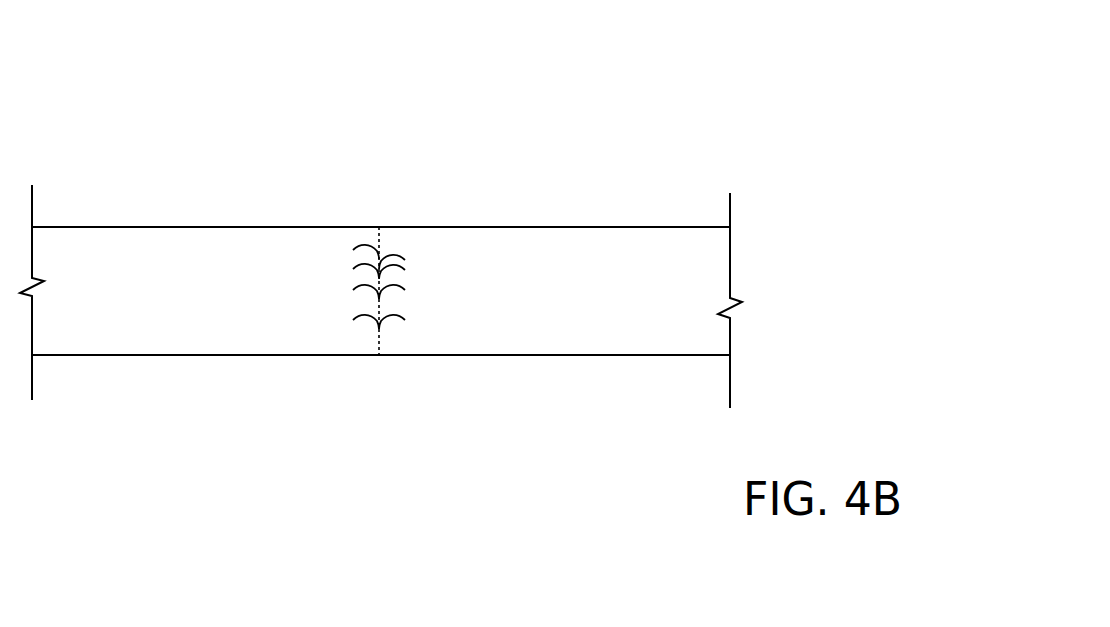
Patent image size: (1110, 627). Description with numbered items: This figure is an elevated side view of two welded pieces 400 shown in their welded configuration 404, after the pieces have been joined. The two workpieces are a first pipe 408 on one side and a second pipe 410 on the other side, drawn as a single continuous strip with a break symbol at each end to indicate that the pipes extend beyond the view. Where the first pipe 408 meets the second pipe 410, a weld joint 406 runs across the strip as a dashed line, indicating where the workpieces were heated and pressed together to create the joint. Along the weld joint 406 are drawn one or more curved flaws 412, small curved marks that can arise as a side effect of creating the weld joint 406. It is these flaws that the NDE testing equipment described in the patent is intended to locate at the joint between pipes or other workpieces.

The two welded pieces 400 is at (418, 258).
The welded configuration 404 is at (418, 258).
The weld joint 406 is at (380, 244).
The first pipe 408 is at (197, 333).
The second pipe 410 is at (587, 320).
The curved flaws 412 is at (398, 332).